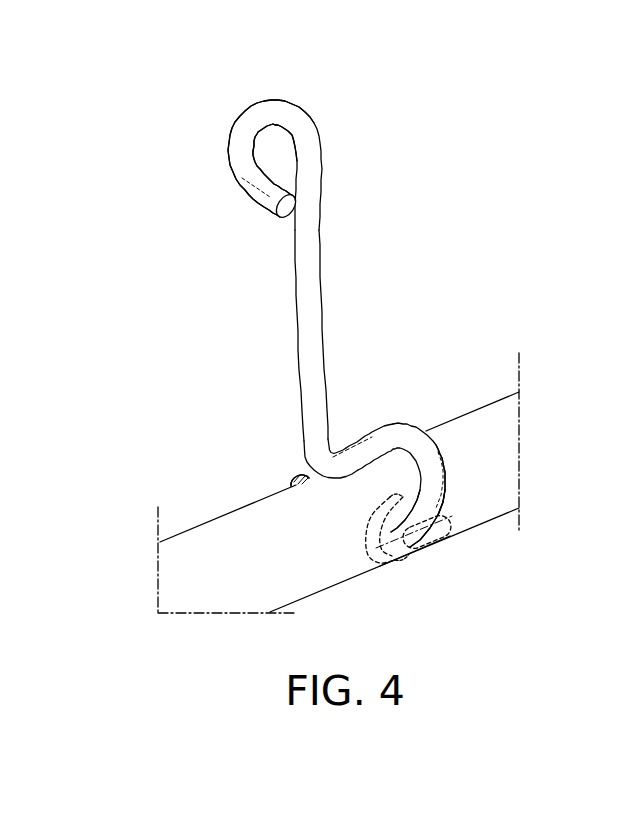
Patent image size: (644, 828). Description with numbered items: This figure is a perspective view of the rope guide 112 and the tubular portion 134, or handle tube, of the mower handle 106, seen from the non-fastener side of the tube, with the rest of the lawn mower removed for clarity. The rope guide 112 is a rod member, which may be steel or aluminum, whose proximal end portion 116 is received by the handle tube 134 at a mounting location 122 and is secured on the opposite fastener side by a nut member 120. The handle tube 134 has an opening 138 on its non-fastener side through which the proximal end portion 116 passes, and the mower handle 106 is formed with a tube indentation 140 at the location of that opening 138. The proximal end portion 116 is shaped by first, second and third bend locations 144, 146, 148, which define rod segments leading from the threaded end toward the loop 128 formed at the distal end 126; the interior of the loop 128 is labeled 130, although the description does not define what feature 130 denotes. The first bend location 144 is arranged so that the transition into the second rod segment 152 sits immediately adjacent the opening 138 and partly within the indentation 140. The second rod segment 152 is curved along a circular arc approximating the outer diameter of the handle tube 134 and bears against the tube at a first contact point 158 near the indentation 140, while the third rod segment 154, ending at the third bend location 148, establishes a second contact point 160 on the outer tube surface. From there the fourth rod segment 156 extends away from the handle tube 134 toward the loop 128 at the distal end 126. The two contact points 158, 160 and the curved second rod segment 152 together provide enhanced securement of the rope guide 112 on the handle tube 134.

The mower handle 106 is at (541, 385).
The rope guide 112 is at (322, 148).
The proximal end portion 116 is at (282, 477).
The nut member 120 is at (293, 468).
The mounting location 122 is at (435, 553).
The distal end 126 is at (247, 102).
The loop 128 is at (240, 157).
The inner surface of hook 130 is at (286, 125).
The tubular portion 134 is at (183, 540).
The opening 138 is at (383, 560).
The tube indentation 140 is at (441, 538).
The first bend location 144 is at (407, 548).
The second bend location 146 is at (428, 441).
The third bend location 148 is at (328, 473).
The second rod segment 152 is at (443, 480).
The third rod segment 154 is at (368, 441).
The fourth rod segment 156 is at (311, 243).
The first contact point 158 is at (410, 530).
The second contact point 160 is at (333, 476).